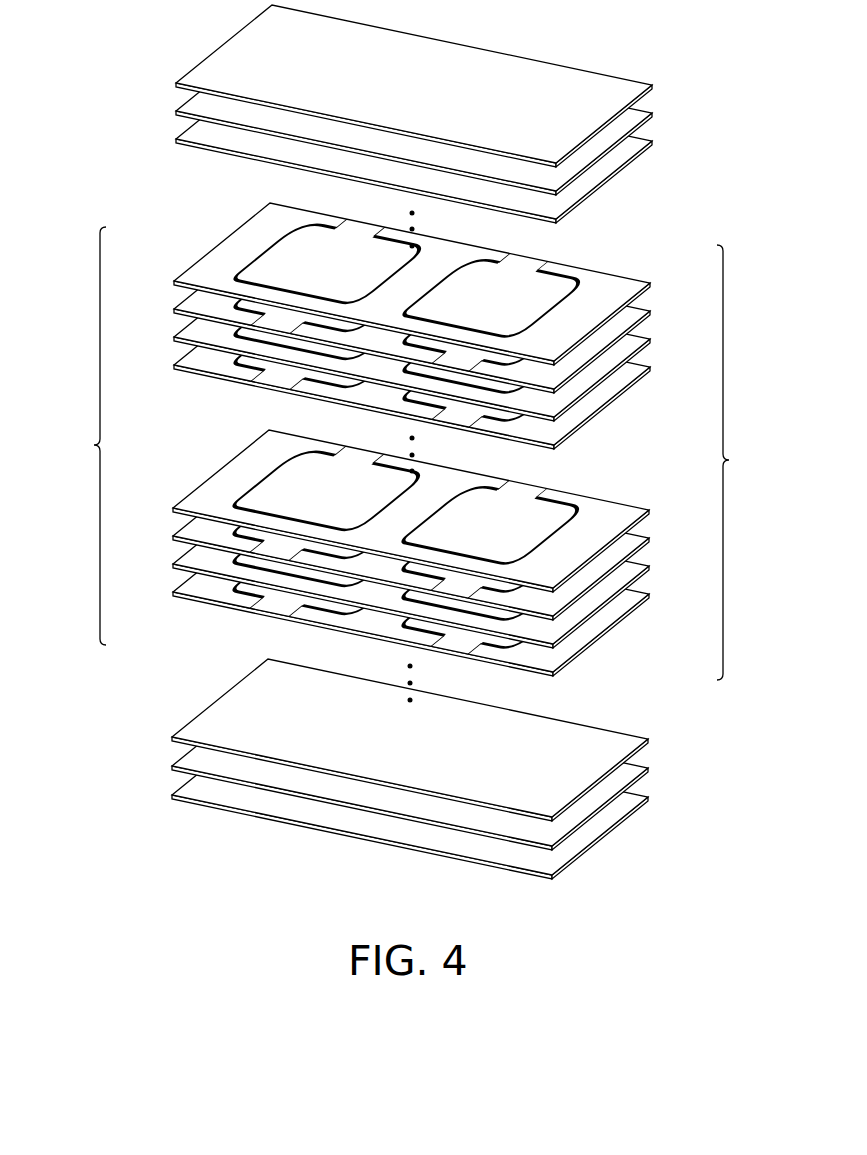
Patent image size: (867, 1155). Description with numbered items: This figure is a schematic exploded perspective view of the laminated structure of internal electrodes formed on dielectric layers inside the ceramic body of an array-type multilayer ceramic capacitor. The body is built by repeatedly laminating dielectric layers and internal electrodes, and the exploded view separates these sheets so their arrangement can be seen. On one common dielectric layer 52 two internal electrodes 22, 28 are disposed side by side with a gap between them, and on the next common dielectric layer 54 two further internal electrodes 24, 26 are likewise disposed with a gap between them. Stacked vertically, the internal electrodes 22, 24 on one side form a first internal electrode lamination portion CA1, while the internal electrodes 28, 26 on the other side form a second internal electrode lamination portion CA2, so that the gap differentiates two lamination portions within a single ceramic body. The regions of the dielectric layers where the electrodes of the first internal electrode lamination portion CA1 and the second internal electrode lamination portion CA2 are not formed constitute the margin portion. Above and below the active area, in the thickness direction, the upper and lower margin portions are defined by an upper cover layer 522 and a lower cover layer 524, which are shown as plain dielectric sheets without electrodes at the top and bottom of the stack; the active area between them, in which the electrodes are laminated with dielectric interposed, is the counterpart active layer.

The internal electrode 22 is at (280, 248).
The internal electrode 24 is at (252, 305).
The internal electrode 26 is at (513, 362).
The internal electrode 28 is at (557, 308).
The dielectric layer 52 is at (618, 282).
The dielectric layer 54 is at (607, 330).
The upper cover layer 522 is at (671, 75).
The lower cover layer 524 is at (671, 731).
The first internal electrode lamination portion CA1 is at (75, 436).
The second internal electrode lamination portion CA2 is at (747, 462).